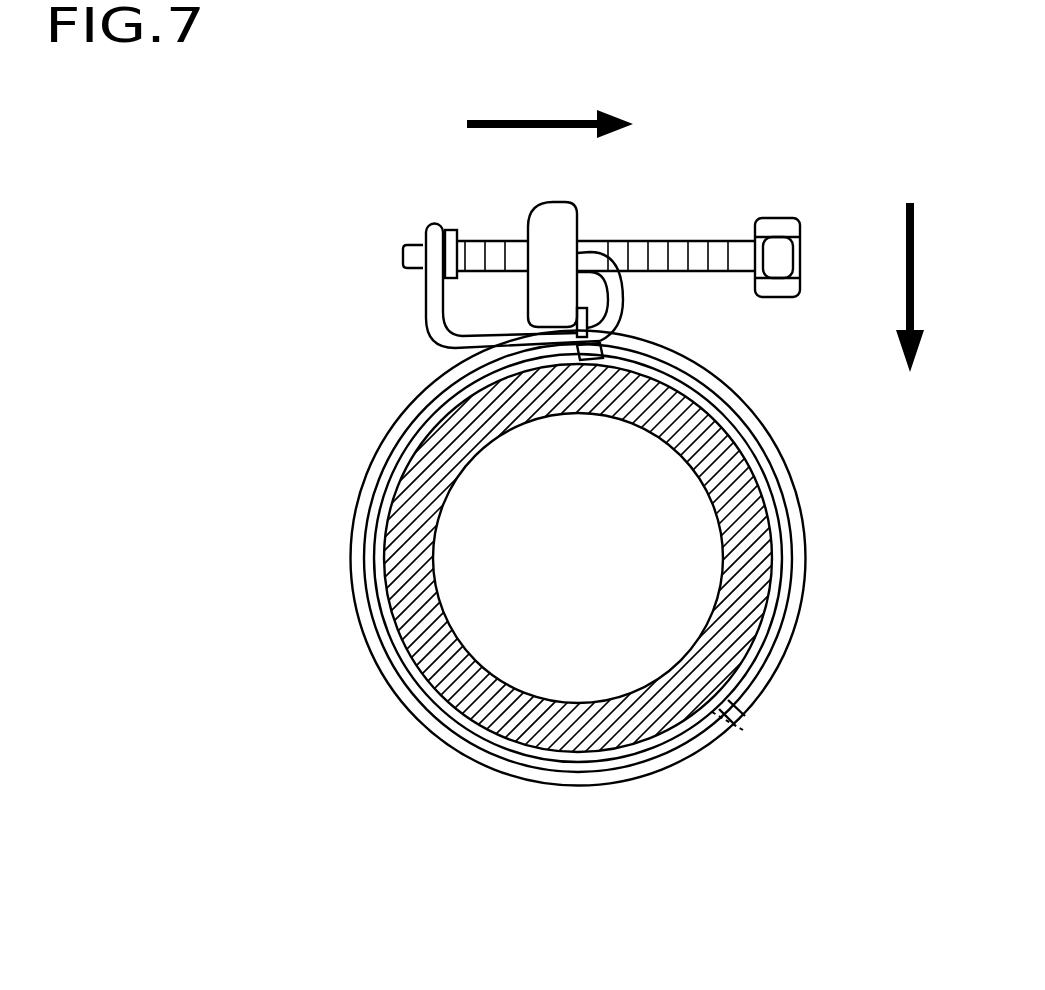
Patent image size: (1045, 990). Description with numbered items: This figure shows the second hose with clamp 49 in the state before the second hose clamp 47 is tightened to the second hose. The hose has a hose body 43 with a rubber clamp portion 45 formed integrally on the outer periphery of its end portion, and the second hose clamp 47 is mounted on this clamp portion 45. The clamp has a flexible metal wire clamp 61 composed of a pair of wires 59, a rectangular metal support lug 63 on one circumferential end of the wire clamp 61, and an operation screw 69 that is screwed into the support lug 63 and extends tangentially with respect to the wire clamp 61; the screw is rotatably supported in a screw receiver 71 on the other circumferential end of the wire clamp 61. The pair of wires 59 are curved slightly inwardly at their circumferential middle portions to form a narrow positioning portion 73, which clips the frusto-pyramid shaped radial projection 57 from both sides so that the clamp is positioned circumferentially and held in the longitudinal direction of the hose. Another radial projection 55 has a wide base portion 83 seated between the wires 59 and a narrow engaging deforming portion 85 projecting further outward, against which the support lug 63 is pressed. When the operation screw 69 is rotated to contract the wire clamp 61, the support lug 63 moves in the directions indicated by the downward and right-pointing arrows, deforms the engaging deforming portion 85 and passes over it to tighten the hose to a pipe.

The second hose with clamp 49 is at (276, 153).
The wire clamp 61 is at (807, 512).
The wires 59 is at (785, 632).
The clamp portion 45 is at (404, 458).
The hose body 43 is at (427, 628).
The radial projection 57 is at (737, 721).
The positioning portion 73 is at (712, 746).
The second hose clamp 47 is at (410, 300).
The screw receiver 71 is at (450, 240).
The operation screw 69 is at (655, 238).
The support lug 63 is at (553, 233).
The radial projection 55 is at (593, 309).
The engaging deforming portion 85 is at (584, 326).
The base portion 83 is at (600, 351).